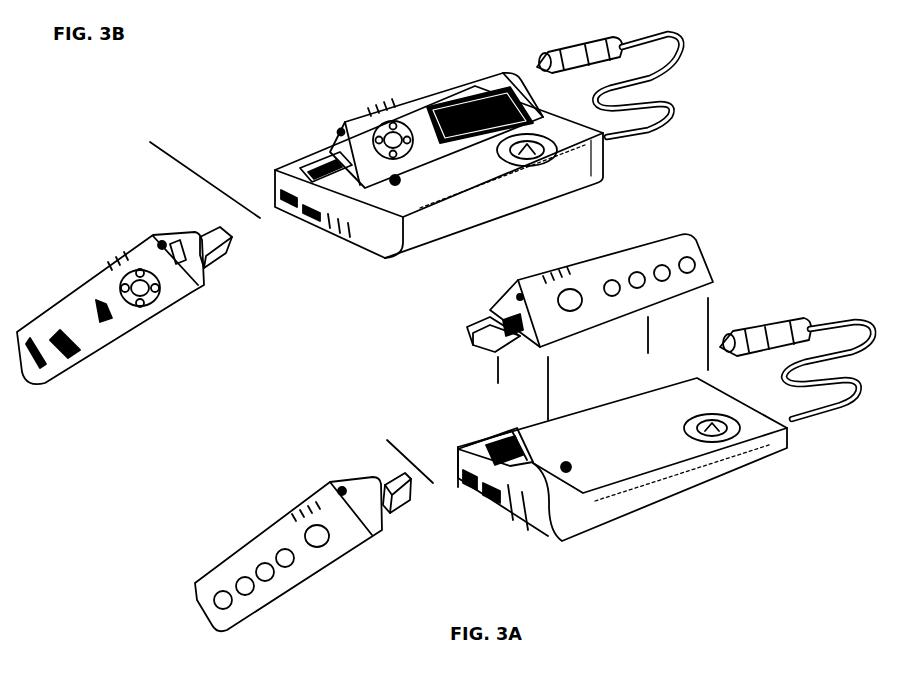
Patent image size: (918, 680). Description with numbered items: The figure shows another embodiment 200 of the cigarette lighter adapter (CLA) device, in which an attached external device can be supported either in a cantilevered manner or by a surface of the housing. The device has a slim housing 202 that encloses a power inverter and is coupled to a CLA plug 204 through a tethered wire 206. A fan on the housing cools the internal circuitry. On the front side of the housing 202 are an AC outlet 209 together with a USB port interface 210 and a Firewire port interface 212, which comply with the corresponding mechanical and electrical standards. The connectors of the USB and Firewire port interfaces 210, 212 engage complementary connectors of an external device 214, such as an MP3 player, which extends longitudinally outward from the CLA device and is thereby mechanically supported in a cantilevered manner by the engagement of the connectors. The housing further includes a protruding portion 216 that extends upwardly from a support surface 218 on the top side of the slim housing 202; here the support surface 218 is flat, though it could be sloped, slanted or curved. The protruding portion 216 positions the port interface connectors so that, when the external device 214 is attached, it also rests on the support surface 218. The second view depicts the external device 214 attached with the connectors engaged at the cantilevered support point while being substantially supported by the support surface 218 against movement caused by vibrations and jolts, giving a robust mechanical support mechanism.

In FIG. 3B, the CLA device embodiment 200 is at (381, 335).
In FIG. 3A, the slim housing 202 is at (637, 500).
In FIG. 3A, the CLA plug 204 is at (749, 331).
In FIG. 3A, the tethered wire 206 is at (833, 313).
In FIG. 3A, the AC outlet 209 is at (524, 517).
In FIG. 3A, the USB port interface 210 is at (497, 497).
In FIG. 3A, the Firewire port interface 212 is at (450, 485).
In FIG. 3A, the external device 214 is at (247, 540).
In FIG. 3A, the protruding portion 216 is at (500, 445).
In FIG. 3A, the support surface 218 is at (617, 413).